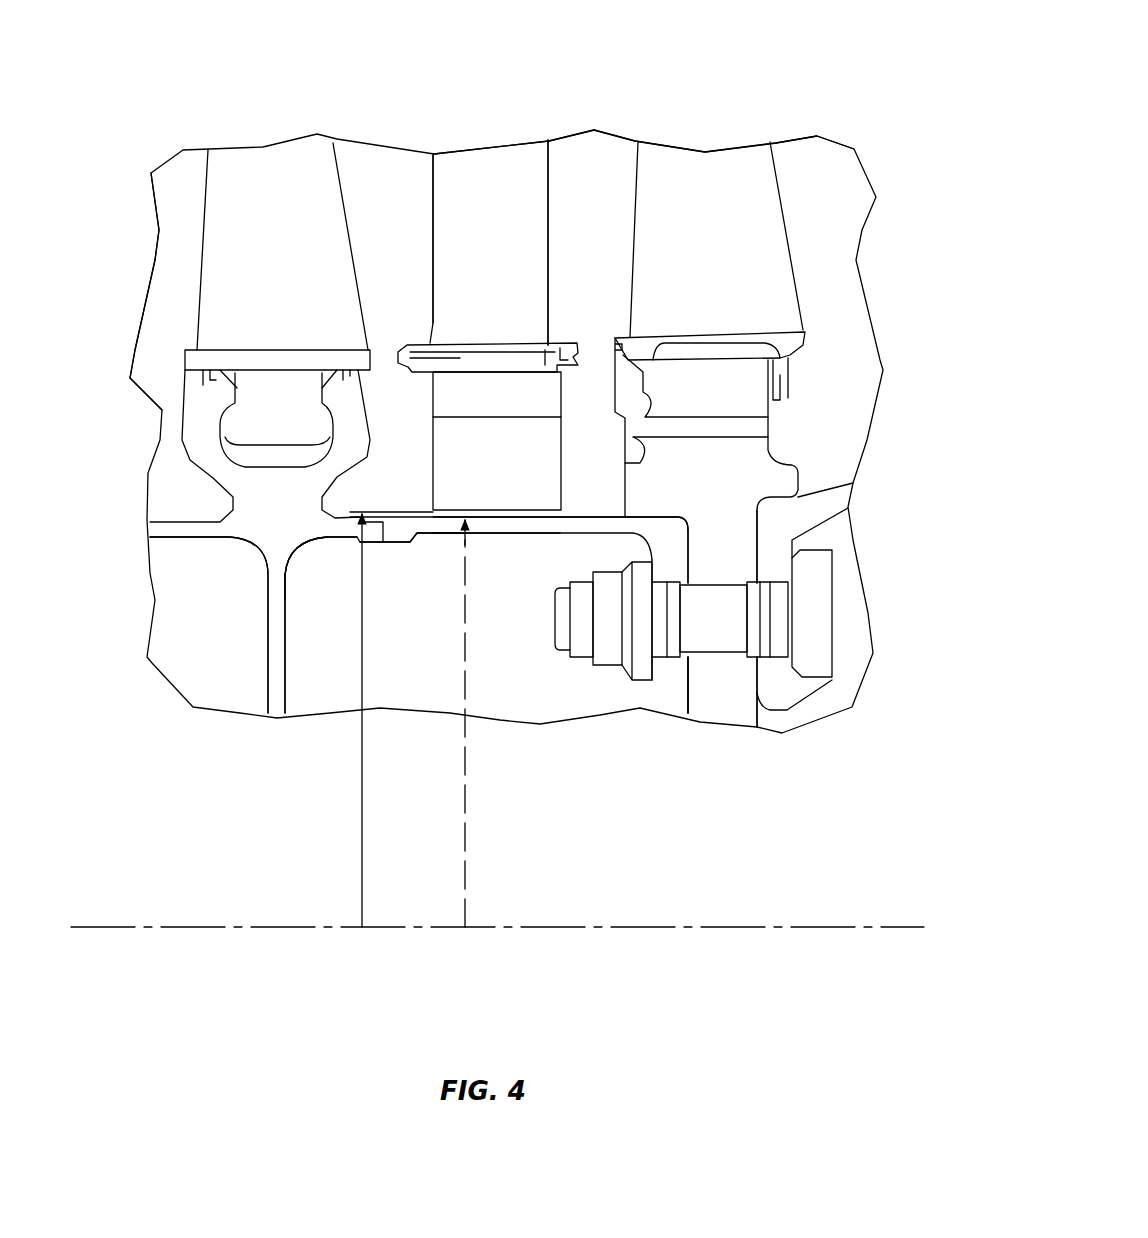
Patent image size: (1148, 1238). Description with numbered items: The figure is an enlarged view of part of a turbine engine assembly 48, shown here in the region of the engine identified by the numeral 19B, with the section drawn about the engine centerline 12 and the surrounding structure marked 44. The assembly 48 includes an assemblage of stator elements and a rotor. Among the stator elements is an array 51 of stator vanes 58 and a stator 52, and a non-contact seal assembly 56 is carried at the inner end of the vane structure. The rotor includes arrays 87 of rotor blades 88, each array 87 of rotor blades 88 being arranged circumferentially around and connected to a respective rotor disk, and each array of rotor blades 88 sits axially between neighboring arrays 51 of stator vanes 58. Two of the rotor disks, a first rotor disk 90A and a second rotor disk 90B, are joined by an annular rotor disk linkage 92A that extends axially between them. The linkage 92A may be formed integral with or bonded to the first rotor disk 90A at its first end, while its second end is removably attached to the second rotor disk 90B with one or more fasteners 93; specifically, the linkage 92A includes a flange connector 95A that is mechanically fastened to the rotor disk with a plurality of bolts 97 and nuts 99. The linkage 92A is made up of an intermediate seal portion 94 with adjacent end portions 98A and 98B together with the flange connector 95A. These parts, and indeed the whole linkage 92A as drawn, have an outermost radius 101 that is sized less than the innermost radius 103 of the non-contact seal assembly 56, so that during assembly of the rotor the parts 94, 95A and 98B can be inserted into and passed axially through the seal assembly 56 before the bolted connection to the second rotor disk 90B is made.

The engine central longitudinal axis 12 is at (811, 932).
The turbine section 19B is at (764, 73).
The turbine engine assembly 48 is at (648, 78).
The rotor disk assembly 44 is at (174, 255).
The array of stator vanes 51 is at (564, 167).
The stator 52 is at (562, 342).
The non-contact seal assembly 56 is at (425, 438).
The stator vane 58 is at (503, 266).
The array of rotor blades 87 is at (349, 164).
The rotor blade 88 is at (286, 268).
The first rotor disk 90A is at (268, 700).
The second rotor disk 90B is at (732, 703).
The annular rotor disk linkage 92A is at (427, 540).
The fastener 93 is at (618, 684).
The intermediate seal portion 94 is at (560, 549).
The flange connector 95A is at (667, 673).
The bolt 97 is at (822, 653).
The end portion 98A is at (347, 548).
The end portion 98B is at (597, 513).
The nut 99 is at (583, 663).
The outermost radius 101 is at (359, 875).
The innermost radius 103 is at (466, 883).